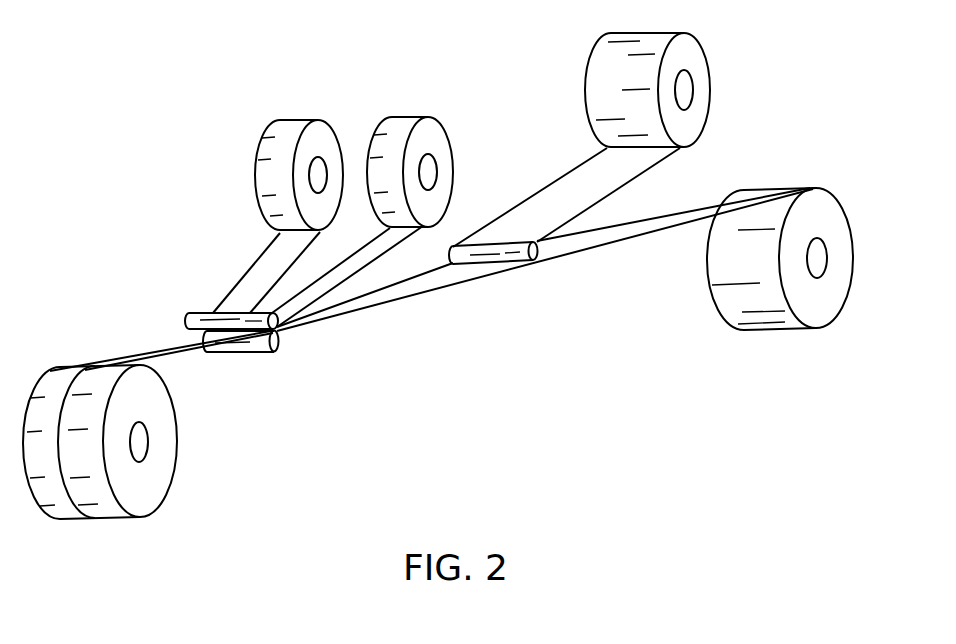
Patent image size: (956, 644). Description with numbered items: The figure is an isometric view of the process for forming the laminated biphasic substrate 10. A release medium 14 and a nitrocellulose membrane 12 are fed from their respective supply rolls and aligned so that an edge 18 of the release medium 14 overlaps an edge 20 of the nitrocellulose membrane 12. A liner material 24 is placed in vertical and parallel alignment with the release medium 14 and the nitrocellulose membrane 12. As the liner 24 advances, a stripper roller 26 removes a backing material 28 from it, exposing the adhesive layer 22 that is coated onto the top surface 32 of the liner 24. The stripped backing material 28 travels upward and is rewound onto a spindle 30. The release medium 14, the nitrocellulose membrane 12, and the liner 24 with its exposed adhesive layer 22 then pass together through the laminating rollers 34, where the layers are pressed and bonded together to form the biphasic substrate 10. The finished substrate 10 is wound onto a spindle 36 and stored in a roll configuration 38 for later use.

The substrate 10 is at (105, 334).
The nitrocellulose membrane 12 is at (433, 129).
The release medium 14 is at (325, 132).
The edge of the release medium 18 is at (250, 275).
The edge of the nitrocellulose membrane 20 is at (370, 253).
The adhesive layer 22 is at (377, 295).
The liner material 24 is at (843, 290).
The stripper roller 26 is at (538, 256).
The backing material 28 is at (563, 183).
The spindle 30 is at (686, 90).
The top surface of the liner 32 is at (398, 283).
The laminating rollers 34 is at (282, 339).
The spindle 36 is at (143, 441).
The roll configuration 38 is at (158, 392).